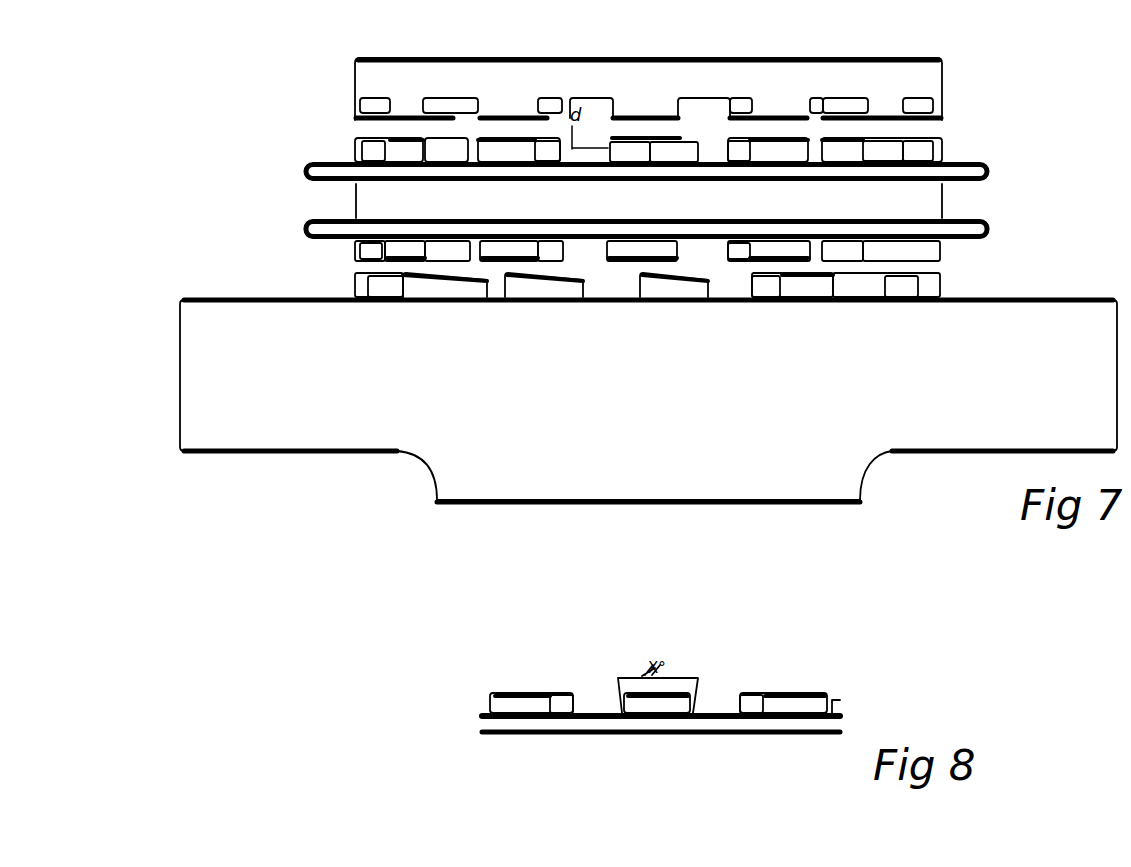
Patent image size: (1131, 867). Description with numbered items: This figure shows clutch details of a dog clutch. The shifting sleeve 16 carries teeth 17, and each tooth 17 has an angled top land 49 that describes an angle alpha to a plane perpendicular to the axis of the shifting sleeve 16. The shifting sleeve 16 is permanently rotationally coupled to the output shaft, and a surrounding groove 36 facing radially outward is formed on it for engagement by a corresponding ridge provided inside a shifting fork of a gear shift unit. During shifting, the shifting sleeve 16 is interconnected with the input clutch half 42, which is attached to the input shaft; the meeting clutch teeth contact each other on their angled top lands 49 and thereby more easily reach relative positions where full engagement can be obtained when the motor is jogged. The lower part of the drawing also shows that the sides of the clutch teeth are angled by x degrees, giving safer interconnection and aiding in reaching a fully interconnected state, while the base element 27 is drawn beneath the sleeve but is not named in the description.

The housing cover 42 is at (940, 74).
The first contact carrier 16 is at (958, 153).
The contact element 49 is at (626, 134).
The contact 17 is at (647, 155).
The second contact carrier 36 is at (977, 203).
The base body 27 is at (203, 386).